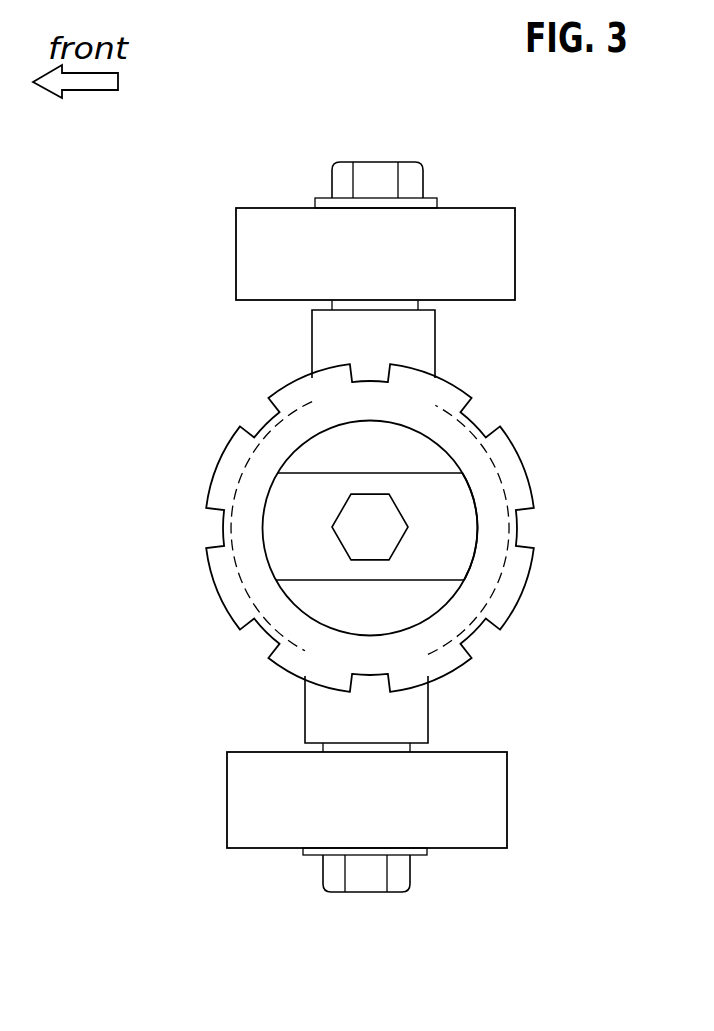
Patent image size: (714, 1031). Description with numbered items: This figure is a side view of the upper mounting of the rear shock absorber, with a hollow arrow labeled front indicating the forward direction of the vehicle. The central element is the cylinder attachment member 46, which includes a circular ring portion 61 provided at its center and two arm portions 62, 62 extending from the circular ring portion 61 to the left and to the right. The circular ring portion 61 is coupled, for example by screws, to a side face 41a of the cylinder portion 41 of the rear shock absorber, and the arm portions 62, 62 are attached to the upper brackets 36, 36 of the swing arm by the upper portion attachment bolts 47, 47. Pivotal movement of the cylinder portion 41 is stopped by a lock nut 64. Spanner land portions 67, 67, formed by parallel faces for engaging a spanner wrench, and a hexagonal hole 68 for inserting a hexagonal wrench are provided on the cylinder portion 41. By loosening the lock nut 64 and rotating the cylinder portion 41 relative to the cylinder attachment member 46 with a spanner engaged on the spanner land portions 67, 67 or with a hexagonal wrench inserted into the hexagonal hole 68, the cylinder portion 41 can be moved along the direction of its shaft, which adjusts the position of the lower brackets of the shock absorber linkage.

The upper bracket 36 is at (482, 207).
The cylinder portion 41 is at (477, 503).
The side face of the cylinder portion 41a is at (473, 563).
The cylinder attachment member 46 is at (303, 357).
The upper portion attachment bolt 47 is at (375, 162).
The circular ring portion 61 is at (237, 475).
The arm portion 62 is at (435, 340).
The lock nut 64 is at (215, 598).
The spanner land portion 67 is at (320, 470).
The hexagonal hole 68 is at (338, 538).